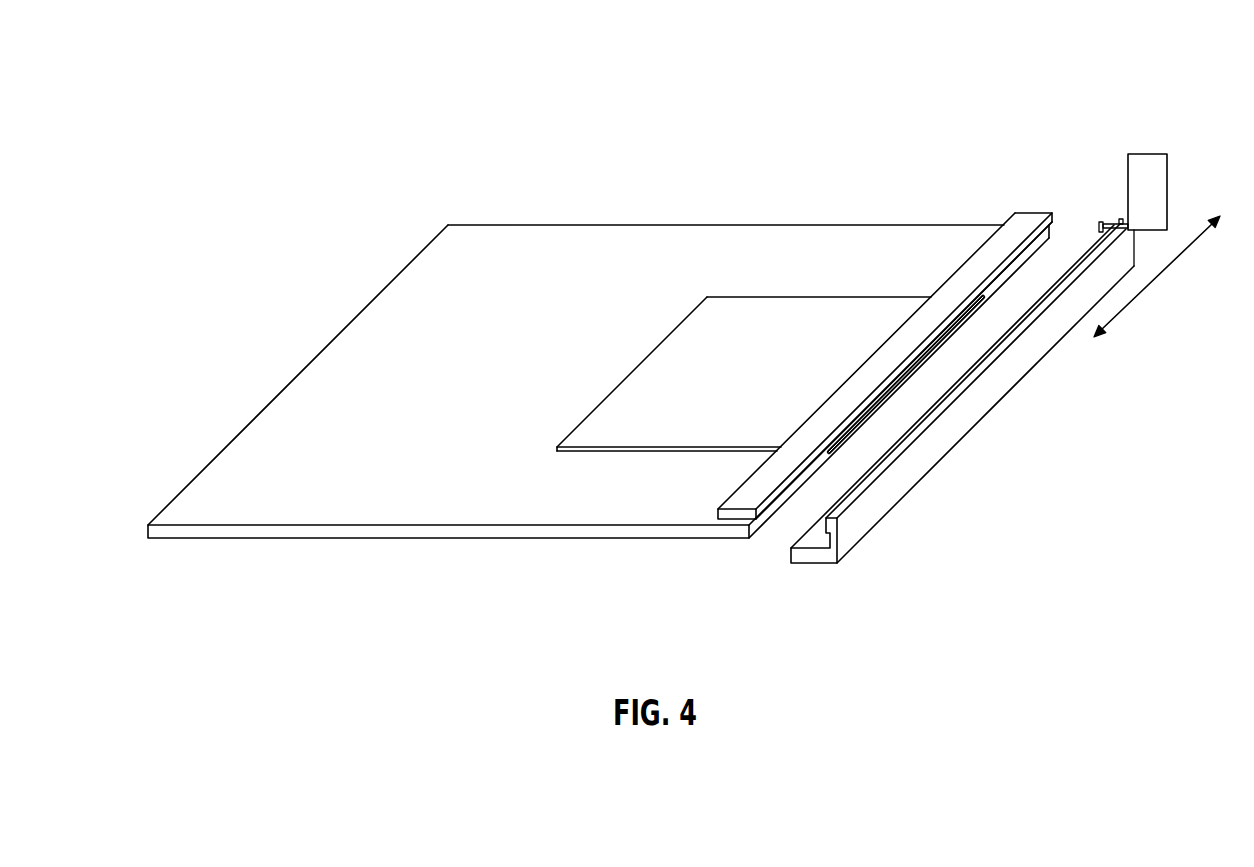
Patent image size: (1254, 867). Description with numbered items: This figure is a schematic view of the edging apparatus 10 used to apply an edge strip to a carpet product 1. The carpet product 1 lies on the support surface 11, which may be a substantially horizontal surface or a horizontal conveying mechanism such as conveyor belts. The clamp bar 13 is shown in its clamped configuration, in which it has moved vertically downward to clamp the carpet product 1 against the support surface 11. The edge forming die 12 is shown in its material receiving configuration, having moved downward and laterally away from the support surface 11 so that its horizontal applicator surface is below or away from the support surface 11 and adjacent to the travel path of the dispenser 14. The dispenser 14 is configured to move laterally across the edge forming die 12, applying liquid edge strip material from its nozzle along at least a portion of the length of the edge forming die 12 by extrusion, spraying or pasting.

The edging apparatus 10 is at (270, 121).
The support surface 11 is at (298, 413).
The carpet product 1 is at (673, 358).
The clamp bar 13 is at (1008, 220).
The edge forming die 12 is at (972, 412).
The dispenser 14 is at (1141, 168).